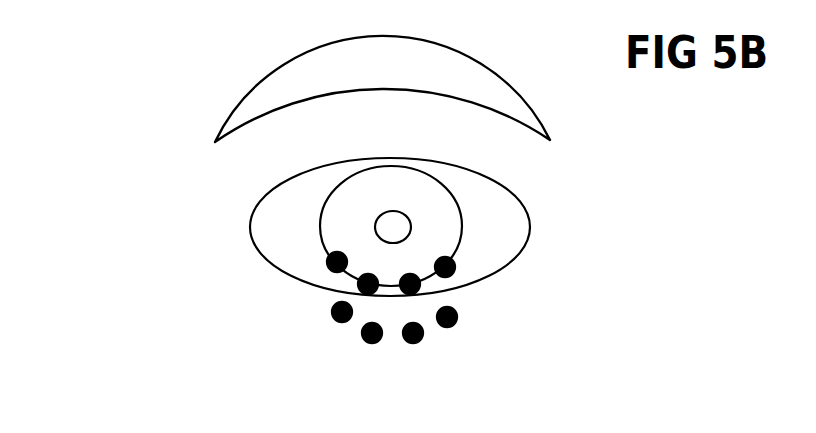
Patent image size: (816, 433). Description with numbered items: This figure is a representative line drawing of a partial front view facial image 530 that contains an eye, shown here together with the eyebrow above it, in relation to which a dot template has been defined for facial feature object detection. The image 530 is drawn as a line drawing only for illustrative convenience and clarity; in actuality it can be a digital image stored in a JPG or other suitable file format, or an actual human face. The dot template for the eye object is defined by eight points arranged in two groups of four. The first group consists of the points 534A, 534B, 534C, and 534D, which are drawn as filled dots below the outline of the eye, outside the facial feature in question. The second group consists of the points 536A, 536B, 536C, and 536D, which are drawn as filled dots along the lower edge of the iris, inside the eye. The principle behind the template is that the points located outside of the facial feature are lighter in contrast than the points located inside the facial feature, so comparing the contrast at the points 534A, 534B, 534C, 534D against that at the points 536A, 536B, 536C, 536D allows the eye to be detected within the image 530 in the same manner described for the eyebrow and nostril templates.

The partial front view facial image 530 is at (199, 340).
The point 534A is at (332, 312).
The point 534B is at (366, 342).
The point 534C is at (419, 342).
The point 534D is at (456, 317).
The point 536A is at (337, 262).
The point 536B is at (368, 284).
The point 536C is at (410, 284).
The point 536D is at (445, 267).